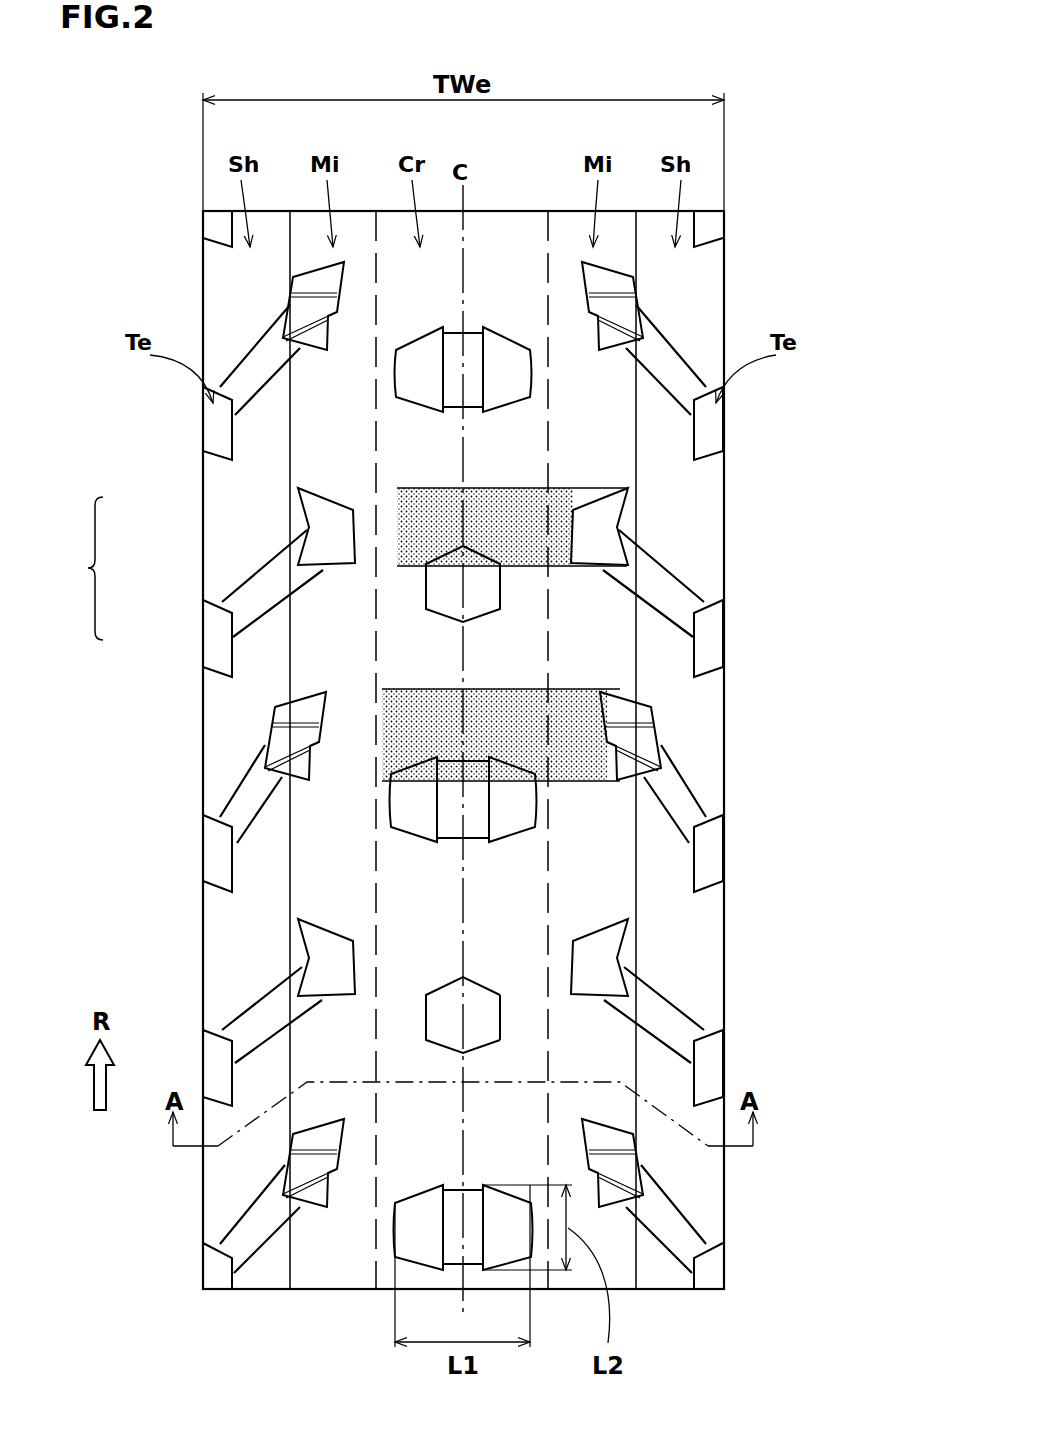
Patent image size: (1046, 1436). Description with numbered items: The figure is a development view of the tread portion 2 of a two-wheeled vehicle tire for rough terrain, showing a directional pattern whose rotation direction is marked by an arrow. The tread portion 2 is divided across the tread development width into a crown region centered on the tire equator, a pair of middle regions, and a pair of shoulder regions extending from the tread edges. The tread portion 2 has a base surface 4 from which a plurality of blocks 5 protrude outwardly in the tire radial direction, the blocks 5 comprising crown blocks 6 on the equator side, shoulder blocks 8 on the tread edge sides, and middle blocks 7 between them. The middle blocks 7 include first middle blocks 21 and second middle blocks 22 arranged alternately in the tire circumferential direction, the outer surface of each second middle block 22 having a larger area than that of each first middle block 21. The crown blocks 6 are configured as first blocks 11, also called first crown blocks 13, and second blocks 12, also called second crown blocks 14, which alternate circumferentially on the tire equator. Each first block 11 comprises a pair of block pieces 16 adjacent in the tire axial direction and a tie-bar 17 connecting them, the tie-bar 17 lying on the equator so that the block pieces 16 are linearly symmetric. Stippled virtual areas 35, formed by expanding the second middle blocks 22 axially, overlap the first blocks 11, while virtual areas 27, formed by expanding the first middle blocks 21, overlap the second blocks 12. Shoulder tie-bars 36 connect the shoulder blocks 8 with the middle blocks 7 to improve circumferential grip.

The tread portion 2 is at (538, 197).
The base surface 4 is at (693, 290).
The blocks 5 is at (83, 568).
The crown blocks 6 is at (408, 386).
The middle blocks 7 is at (325, 522).
The shoulder blocks 8 is at (218, 432).
The first blocks 11 is at (512, 817).
The second blocks 12 is at (477, 1007).
The first crown blocks 13 is at (515, 798).
The second crown blocks 14 is at (482, 1025).
The block pieces 16 is at (412, 357).
The tie-bar 17 is at (470, 358).
The first middle block 21 is at (598, 517).
The second middle block 22 is at (280, 742).
The virtual areas 27 is at (523, 520).
The virtual areas 35 is at (575, 703).
The shoulder tie-bar 36 is at (263, 360).